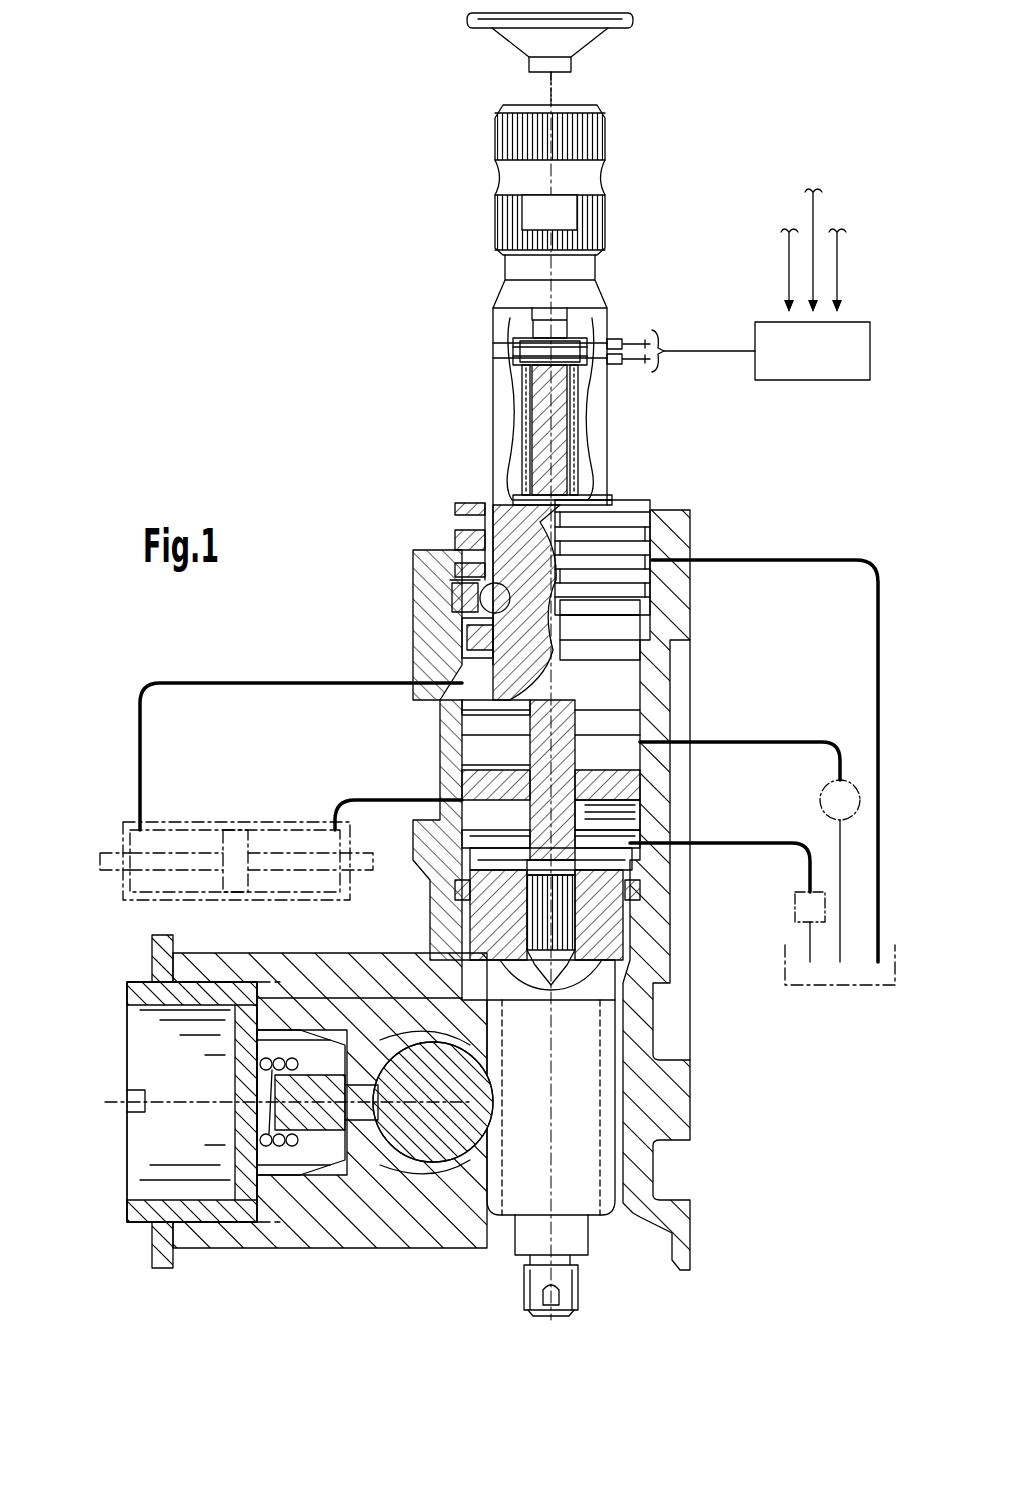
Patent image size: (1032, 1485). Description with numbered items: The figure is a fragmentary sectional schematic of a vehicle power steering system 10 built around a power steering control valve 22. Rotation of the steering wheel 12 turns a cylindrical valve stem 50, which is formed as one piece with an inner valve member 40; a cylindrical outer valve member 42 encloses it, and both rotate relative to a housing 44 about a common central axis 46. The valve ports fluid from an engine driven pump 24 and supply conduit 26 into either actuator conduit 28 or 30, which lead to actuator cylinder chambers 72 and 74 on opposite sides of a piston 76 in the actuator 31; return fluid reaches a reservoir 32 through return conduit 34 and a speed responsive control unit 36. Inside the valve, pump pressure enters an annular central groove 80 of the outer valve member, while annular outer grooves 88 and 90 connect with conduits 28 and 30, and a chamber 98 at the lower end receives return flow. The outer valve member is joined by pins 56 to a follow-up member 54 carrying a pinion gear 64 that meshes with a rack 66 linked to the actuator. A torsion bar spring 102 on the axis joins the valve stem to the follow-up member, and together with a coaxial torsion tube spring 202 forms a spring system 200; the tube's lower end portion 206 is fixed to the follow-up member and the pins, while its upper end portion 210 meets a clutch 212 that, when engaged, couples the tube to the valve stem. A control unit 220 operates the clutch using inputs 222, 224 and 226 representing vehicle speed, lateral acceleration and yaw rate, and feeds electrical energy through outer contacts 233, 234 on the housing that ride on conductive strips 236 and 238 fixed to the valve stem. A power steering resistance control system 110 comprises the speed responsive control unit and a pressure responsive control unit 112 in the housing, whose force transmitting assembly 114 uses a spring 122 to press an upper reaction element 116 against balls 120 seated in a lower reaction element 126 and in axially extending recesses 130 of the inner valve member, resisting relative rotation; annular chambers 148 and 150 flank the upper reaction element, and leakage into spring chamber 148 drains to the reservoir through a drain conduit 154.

The vehicle power steering system 10 is at (285, 272).
The steering wheel 12 is at (630, 20).
The power steering control valve 22 is at (340, 350).
The engine driven pump 24 is at (824, 798).
The supply conduit 26 is at (757, 742).
The actuator conduit 28 is at (137, 765).
The actuator conduit 30 is at (353, 795).
The actuator 31 is at (245, 815).
The reservoir 32 is at (845, 987).
The return conduit 34 is at (752, 843).
The speed responsive control unit 36 is at (797, 908).
The inner valve member 40 is at (640, 700).
The outer valve member 42 is at (660, 716).
The housing 44 is at (500, 563).
The central axis 46 is at (549, 92).
The valve stem 50 is at (572, 178).
The follow-up member 54 is at (500, 912).
The pins 56 is at (462, 884).
The pinion gear 64 is at (607, 1122).
The rack 66 is at (423, 1142).
The actuator cylinder chamber 72 is at (189, 840).
The actuator cylinder chamber 74 is at (283, 840).
The piston 76 is at (237, 872).
The annular central groove 80 is at (467, 742).
The annular outer groove 88 is at (467, 692).
The annular outer groove 90 is at (467, 782).
The chamber 98 is at (467, 842).
The torsion bar spring 102 is at (640, 803).
The power steering resistance control system 110 is at (428, 508).
The pressure responsive control unit 112 is at (445, 595).
The force transmitting assembly 114 is at (455, 640).
The upper reaction element 116 is at (640, 597).
The balls 120 is at (478, 588).
The spring 122 is at (648, 512).
The lower reaction element 126 is at (640, 643).
The axially extending recesses 130 is at (425, 560).
The spring chamber 148 is at (466, 527).
The annular chamber 150 is at (470, 620).
The drain conduit 154 is at (878, 672).
The spring system 200 is at (512, 384).
The torsion tube spring 202 is at (600, 437).
The lower end portion 206 is at (645, 888).
The upper end portion 210 is at (524, 408).
The clutch 212 is at (530, 354).
The control unit 220 is at (758, 326).
The input 222 is at (838, 240).
The input 224 is at (809, 230).
The input 226 is at (789, 244).
The connector 233 is at (650, 330).
The outer contact 234 is at (620, 364).
The conductive strip 236 is at (493, 337).
The conductive strip 238 is at (493, 344).